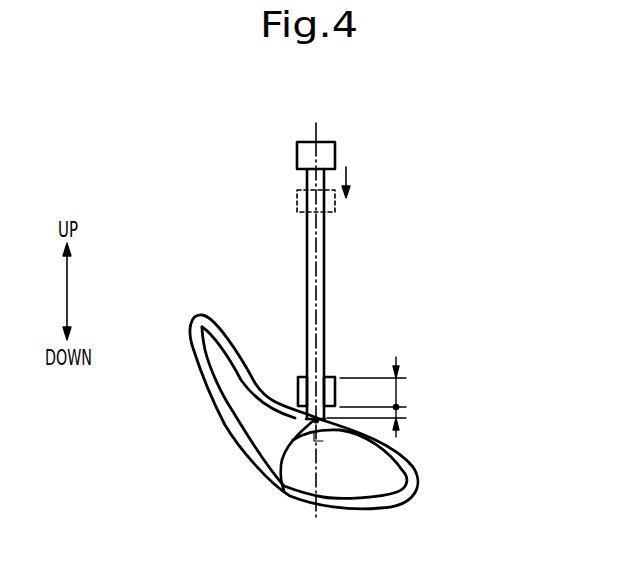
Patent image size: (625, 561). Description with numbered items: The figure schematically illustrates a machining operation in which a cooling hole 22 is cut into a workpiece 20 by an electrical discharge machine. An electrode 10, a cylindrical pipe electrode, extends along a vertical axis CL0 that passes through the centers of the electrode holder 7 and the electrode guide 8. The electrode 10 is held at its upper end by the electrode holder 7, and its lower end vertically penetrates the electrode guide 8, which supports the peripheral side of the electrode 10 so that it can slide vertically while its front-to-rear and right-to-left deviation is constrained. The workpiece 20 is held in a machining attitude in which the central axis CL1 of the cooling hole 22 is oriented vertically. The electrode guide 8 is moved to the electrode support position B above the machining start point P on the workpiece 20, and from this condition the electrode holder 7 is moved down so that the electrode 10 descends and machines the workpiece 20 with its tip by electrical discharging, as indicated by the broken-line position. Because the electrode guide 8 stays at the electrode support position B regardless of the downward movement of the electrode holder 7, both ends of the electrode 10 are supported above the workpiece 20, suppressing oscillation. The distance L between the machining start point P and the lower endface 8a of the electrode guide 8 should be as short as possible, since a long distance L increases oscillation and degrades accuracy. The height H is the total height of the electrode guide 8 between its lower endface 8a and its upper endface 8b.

The electrode holder 7 is at (297, 155).
The electrode 10 is at (324, 293).
The electrode guide 8 is at (286, 392).
The lower endface 8a is at (303, 418).
The upper endface 8b is at (327, 378).
The workpiece 20 is at (407, 447).
The cooling hole 22 is at (298, 438).
The machining start point P is at (315, 422).
The electrode support position B is at (363, 362).
The height of electrode guide H is at (384, 397).
The distance L is at (376, 419).
The vertical axis CL0 is at (318, 256).
The central axis of cooling hole CL1 is at (318, 489).